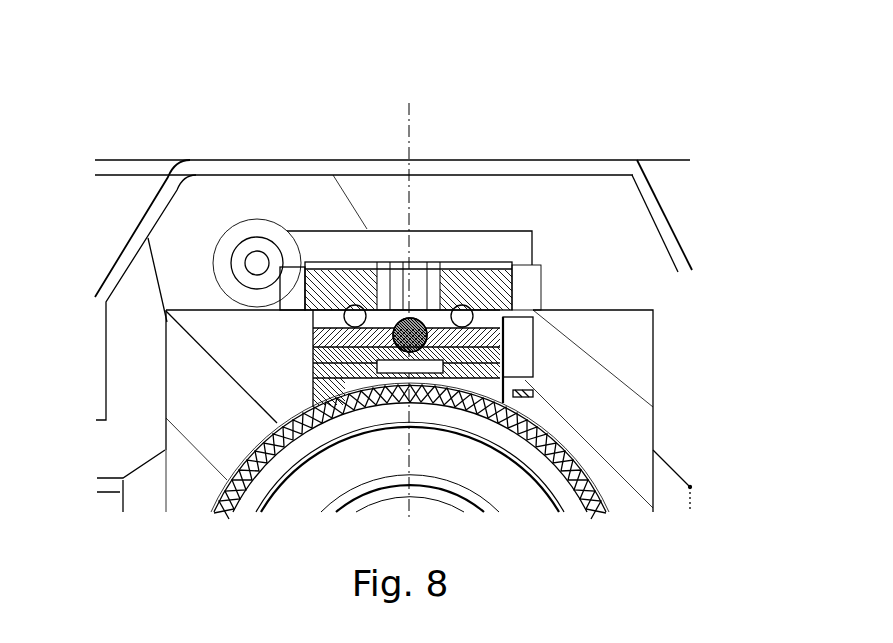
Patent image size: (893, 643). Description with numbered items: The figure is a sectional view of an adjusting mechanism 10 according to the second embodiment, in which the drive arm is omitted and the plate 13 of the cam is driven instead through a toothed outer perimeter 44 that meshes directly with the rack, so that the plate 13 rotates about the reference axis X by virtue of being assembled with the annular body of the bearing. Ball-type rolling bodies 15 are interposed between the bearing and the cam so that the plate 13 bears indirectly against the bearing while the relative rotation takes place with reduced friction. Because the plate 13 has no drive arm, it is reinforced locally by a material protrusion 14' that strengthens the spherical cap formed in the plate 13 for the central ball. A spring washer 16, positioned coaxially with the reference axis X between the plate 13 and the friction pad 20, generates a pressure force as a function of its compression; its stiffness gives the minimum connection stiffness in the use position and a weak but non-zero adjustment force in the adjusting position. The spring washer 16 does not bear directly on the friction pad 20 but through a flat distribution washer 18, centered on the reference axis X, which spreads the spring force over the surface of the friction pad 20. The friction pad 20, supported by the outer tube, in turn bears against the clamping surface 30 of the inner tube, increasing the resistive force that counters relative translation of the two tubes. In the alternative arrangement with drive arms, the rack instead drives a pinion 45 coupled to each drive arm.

The adjusting mechanism 10 is at (480, 243).
The plate 13 is at (470, 322).
The material protrusion 14' is at (380, 224).
The rolling bodies 15 is at (533, 262).
The spring washer 16 is at (488, 355).
The flat distribution washer 18 is at (488, 365).
The friction pad 20 is at (488, 380).
The clamping surface 30 is at (518, 443).
The toothed outer perimeter 44 is at (313, 337).
The pinion 45 is at (326, 262).
The reference axis X is at (412, 125).